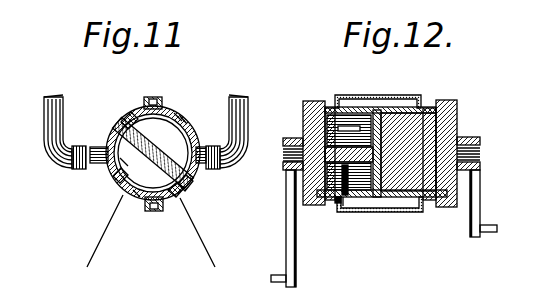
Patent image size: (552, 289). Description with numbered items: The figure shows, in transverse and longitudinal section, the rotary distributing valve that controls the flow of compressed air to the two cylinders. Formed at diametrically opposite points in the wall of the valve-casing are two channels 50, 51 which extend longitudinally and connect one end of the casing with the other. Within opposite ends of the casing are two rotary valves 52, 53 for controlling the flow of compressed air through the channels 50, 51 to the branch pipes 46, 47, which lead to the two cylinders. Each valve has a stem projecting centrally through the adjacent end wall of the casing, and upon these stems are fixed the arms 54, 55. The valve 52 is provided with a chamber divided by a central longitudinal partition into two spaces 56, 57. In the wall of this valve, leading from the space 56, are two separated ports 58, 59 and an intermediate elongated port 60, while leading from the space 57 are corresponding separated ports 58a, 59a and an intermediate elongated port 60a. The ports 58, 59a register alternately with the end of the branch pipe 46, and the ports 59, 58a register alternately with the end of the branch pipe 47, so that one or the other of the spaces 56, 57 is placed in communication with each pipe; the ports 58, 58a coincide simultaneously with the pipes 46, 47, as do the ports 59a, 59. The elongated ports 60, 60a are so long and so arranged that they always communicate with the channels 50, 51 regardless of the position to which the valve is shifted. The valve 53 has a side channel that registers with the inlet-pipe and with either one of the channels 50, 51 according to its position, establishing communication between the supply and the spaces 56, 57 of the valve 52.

In FIG. 11, the branch pipe 46 is at (53, 118).
In FIG. 11, the branch pipe 47 is at (244, 97).
In FIG. 11, the channel 50 is at (155, 98).
In FIG. 12, the channel 50 is at (393, 108).
In FIG. 11, the channel 51 is at (154, 205).
In FIG. 12, the channel 51 is at (398, 208).
In FIG. 11, the rotary valve 52 is at (118, 137).
In FIG. 12, the rotary valve 52 is at (304, 117).
In FIG. 12, the rotary valve 53 is at (458, 118).
In FIG. 12, the arm 54 is at (287, 229).
In FIG. 12, the arm 55 is at (477, 215).
In FIG. 11, the space 56 is at (167, 151).
In FIG. 12, the space 56 is at (333, 113).
In FIG. 11, the space 57 is at (123, 167).
In FIG. 12, the space 57 is at (327, 207).
In FIG. 11, the port 58 is at (134, 121).
In FIG. 12, the port 58 is at (354, 112).
In FIG. 11, the port 58a is at (184, 188).
In FIG. 11, the port 59 is at (191, 171).
In FIG. 11, the port 59a is at (110, 171).
In FIG. 11, the elongated port 60 is at (179, 128).
In FIG. 11, the elongated port 60a is at (144, 204).
In FIG. 12, the elongated port 60a is at (349, 207).